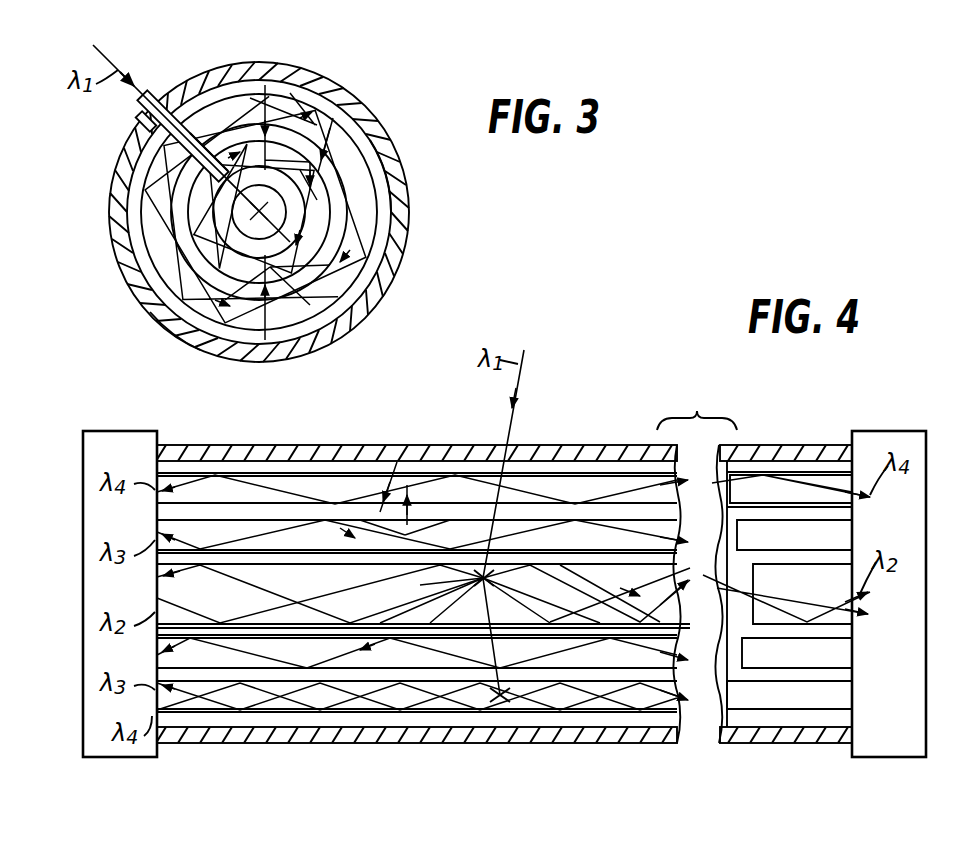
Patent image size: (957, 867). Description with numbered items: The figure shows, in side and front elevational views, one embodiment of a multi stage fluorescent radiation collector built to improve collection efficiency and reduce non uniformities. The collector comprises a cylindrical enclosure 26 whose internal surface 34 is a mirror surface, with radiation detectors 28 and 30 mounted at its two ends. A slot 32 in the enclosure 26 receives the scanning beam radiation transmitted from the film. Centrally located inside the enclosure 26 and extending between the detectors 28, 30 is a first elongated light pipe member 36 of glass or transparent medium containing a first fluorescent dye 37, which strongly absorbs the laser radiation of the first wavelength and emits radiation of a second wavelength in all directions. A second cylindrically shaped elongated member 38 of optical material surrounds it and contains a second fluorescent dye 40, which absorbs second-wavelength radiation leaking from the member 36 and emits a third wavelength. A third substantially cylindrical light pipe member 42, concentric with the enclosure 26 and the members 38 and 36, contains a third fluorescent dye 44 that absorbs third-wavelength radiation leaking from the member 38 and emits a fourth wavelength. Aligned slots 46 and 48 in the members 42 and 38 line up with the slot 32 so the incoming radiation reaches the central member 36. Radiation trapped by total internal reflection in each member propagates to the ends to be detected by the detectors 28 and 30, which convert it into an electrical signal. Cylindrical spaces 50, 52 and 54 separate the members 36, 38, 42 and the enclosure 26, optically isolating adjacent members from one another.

In FIG. 3, the cylindrical enclosure 26 is at (252, 62).
In FIG. 4, the cylindrical enclosure 26 is at (275, 445).
In FIG. 4, the radiation detector 28 is at (121, 760).
In FIG. 4, the radiation detector 30 is at (862, 432).
In FIG. 3, the slot 32 is at (162, 96).
In FIG. 3, the internal surface 34 is at (112, 242).
In FIG. 4, the internal surface 34 is at (346, 728).
In FIG. 3, the first elongated light pipe member 36 is at (396, 162).
In FIG. 4, the first elongated light pipe member 36 is at (398, 626).
In FIG. 3, the first fluorescent dye 37 is at (150, 312).
In FIG. 3, the second cylindrically shaped elongated member 38 is at (333, 118).
In FIG. 4, the second cylindrically shaped elongated member 38 is at (216, 668).
In FIG. 3, the second fluorescent dye 40 is at (135, 190).
In FIG. 3, the third substantially cylindrical elongated light pipe member 42 is at (300, 78).
In FIG. 4, the third substantially cylindrical elongated light pipe member 42 is at (289, 714).
In FIG. 3, the third fluorescent dye 44 is at (150, 262).
In FIG. 3, the slot 46 is at (138, 122).
In FIG. 3, the slot 48 is at (148, 160).
In FIG. 3, the cylindrical space 50 is at (290, 214).
In FIG. 3, the cylindrical space 52 is at (338, 220).
In FIG. 3, the cylindrical space 54 is at (388, 234).